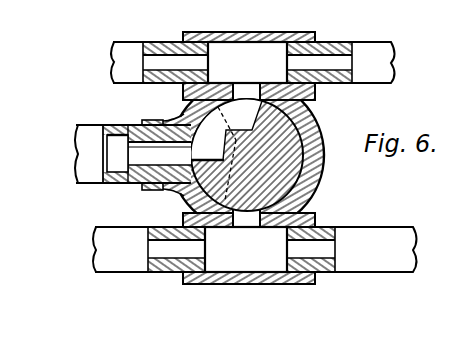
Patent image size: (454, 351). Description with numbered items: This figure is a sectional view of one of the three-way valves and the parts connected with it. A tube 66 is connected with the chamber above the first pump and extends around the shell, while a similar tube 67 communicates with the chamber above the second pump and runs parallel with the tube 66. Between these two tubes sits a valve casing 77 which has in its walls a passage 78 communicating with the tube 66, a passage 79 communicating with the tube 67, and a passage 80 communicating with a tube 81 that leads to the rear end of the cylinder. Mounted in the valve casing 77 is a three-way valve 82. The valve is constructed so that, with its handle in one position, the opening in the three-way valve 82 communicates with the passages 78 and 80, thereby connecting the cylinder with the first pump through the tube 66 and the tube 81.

The tube 66 is at (373, 52).
The tube 67 is at (368, 238).
The valve casing 77 is at (307, 123).
The passage 78 is at (242, 92).
The passage 79 is at (243, 222).
The passage 80 is at (155, 157).
The tube 81 is at (87, 142).
The three-way valve 82 is at (283, 163).